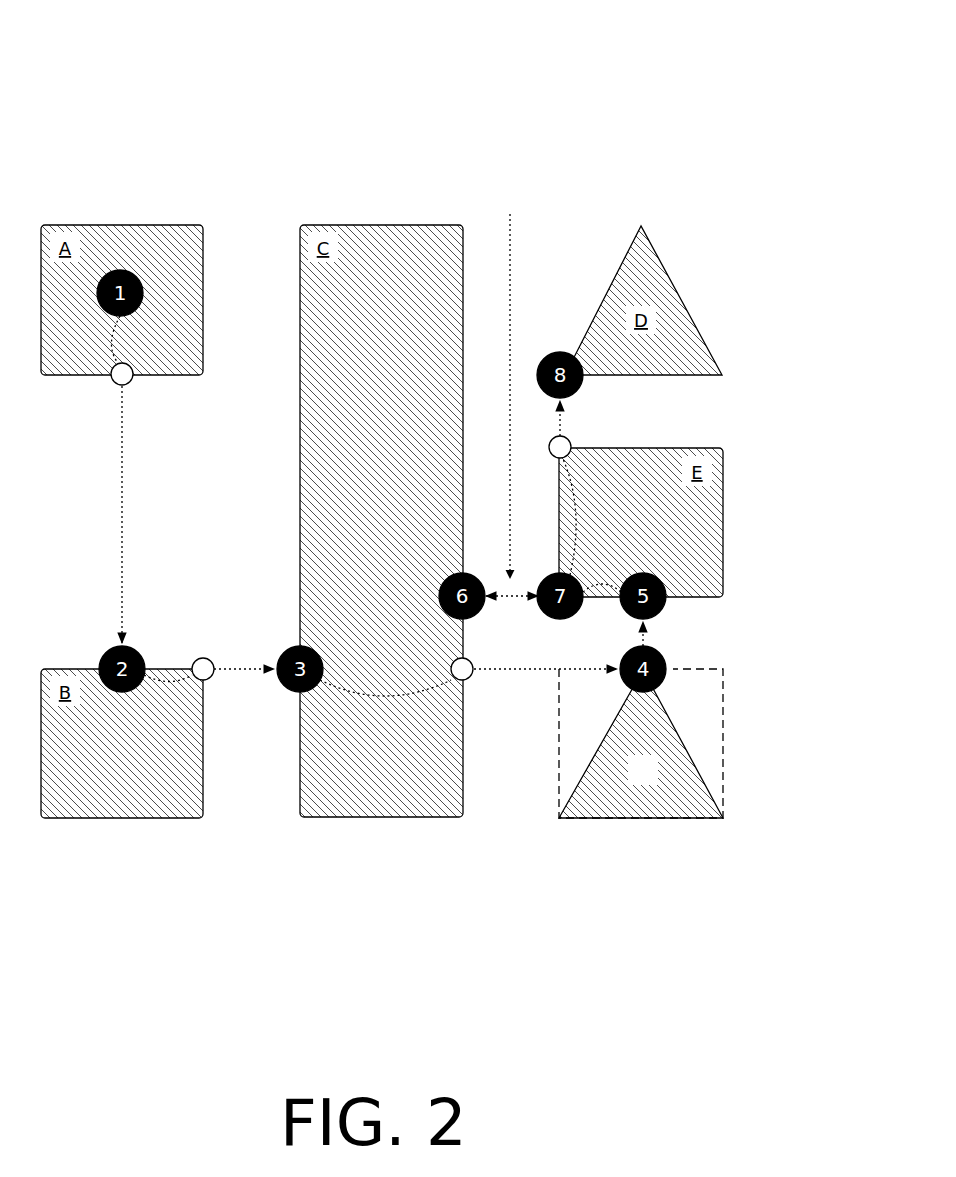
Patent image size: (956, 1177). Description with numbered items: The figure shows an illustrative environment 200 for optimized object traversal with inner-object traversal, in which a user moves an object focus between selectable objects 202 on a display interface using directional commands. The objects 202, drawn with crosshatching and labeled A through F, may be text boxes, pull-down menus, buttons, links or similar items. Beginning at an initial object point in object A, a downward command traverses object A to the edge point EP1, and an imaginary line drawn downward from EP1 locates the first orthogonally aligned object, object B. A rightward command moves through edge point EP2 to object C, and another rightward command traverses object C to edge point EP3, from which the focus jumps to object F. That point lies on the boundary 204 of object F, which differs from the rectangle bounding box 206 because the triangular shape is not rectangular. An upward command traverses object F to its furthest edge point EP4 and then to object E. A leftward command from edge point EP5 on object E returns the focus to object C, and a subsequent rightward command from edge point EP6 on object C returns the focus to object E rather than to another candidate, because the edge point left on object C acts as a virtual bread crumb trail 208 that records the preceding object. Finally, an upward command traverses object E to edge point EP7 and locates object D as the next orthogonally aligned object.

The environment 200 is at (112, 38).
The objects 202 is at (210, 201).
The boundary 204 is at (680, 737).
The rectangle bounding box 206 is at (723, 745).
The virtual bread crumb trail 208 is at (510, 214).
The edge point EP1 is at (112, 385).
The edge point EP2 is at (210, 680).
The edge point EP3 is at (466, 681).
The edge point EP4 is at (665, 653).
The edge point EP5 is at (548, 618).
The edge point EP6 is at (478, 616).
The edge point EP7 is at (570, 442).